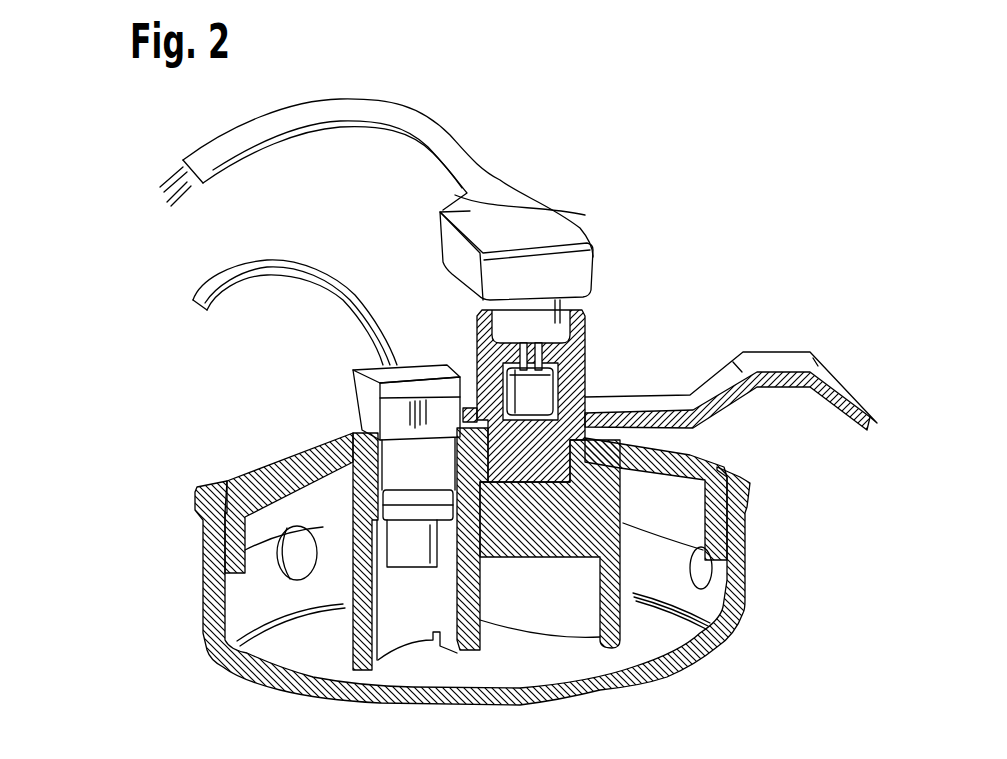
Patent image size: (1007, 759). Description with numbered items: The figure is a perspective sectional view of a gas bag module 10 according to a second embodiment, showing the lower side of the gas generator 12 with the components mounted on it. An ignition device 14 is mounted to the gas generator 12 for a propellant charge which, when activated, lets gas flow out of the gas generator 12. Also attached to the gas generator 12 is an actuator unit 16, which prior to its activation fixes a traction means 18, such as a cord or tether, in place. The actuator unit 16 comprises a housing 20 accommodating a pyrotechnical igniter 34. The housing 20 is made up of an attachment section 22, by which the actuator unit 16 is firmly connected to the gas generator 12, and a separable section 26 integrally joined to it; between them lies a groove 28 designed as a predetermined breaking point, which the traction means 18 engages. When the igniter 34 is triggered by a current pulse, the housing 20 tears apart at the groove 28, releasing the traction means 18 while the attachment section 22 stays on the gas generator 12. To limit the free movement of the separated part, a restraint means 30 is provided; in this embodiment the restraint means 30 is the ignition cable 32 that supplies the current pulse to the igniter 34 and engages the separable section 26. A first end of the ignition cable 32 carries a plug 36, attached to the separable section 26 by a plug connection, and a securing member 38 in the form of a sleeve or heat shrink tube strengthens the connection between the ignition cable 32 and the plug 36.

The gas bag module 10 is at (672, 221).
The gas generator 12 is at (287, 506).
The ignition device 14 is at (377, 378).
The actuator unit 16 is at (520, 326).
The traction means 18 is at (778, 360).
The housing 20 is at (572, 358).
The attachment section 22 is at (527, 467).
The separable section 26 is at (473, 367).
The groove 28 is at (477, 425).
The restraint means 30 is at (173, 170).
The ignition cable 32 is at (175, 186).
The igniter 34 is at (556, 385).
The plug 36 is at (545, 316).
The securing member 38 is at (540, 227).